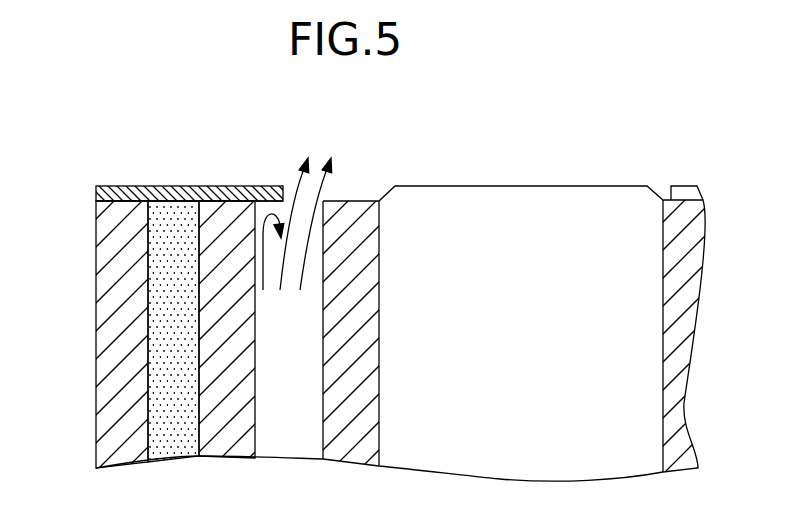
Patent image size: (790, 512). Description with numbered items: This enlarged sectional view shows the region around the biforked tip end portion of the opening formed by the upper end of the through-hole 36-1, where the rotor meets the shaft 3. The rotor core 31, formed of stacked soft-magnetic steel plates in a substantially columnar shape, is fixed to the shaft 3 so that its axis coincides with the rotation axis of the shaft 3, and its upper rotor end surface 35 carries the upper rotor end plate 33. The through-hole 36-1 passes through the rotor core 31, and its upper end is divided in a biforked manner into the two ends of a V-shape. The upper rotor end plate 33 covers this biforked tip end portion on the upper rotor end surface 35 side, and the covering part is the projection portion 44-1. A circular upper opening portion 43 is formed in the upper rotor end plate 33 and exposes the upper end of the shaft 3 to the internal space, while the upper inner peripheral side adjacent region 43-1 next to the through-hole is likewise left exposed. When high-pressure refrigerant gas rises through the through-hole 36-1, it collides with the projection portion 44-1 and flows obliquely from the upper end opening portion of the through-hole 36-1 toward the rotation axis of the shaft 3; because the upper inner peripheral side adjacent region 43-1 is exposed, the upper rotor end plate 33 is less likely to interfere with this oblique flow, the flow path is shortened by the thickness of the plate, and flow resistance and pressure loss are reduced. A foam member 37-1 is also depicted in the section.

The shaft 3 is at (527, 200).
The rotor core 31 is at (96, 237).
The upper rotor end plate 33 is at (150, 197).
The upper rotor end surface 35 is at (123, 197).
The through-hole 36-1 is at (280, 358).
The foam member 37-1 is at (178, 328).
The upper opening portion 43 is at (290, 195).
The upper inner peripheral side adjacent region 43-1 is at (332, 190).
The projection portion 44-1 is at (268, 186).